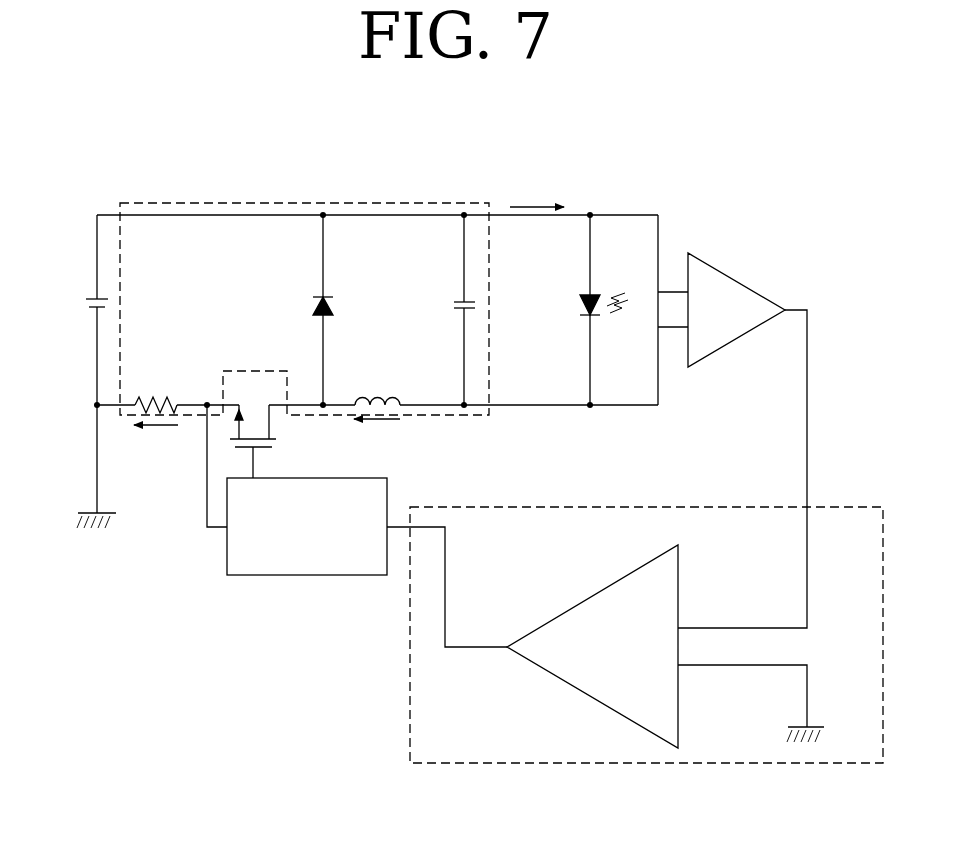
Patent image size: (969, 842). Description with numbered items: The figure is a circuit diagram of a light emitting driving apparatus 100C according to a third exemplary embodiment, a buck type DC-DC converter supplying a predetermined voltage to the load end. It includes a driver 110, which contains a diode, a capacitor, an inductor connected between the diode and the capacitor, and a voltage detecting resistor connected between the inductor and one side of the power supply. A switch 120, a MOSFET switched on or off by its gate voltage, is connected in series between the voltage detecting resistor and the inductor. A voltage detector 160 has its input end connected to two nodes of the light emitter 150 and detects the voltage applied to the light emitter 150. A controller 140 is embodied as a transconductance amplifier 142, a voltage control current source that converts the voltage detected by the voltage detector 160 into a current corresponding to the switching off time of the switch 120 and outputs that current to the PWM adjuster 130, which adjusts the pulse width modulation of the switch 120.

The light emitting driving apparatus 100C is at (444, 127).
The driver 110 is at (287, 203).
The switch 120 is at (277, 432).
The PWM adjuster 130 is at (305, 575).
The controller 140 is at (851, 507).
The transconductance amplifier 142 is at (569, 608).
The light emitter 150 is at (600, 297).
The voltage detector 160 is at (737, 280).